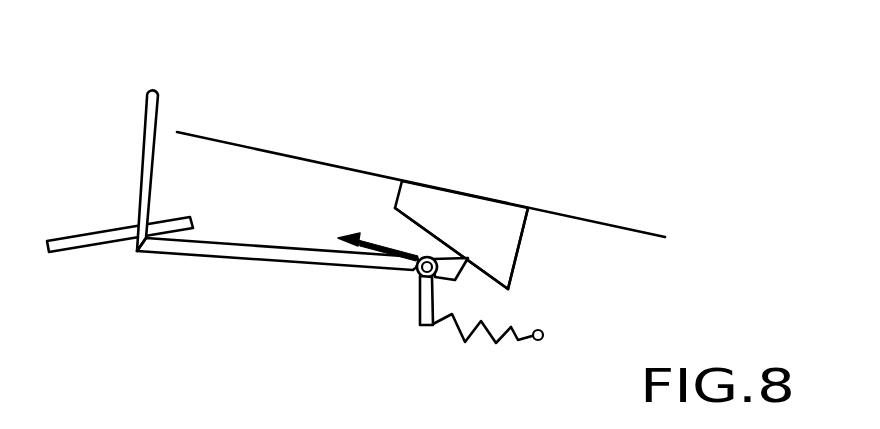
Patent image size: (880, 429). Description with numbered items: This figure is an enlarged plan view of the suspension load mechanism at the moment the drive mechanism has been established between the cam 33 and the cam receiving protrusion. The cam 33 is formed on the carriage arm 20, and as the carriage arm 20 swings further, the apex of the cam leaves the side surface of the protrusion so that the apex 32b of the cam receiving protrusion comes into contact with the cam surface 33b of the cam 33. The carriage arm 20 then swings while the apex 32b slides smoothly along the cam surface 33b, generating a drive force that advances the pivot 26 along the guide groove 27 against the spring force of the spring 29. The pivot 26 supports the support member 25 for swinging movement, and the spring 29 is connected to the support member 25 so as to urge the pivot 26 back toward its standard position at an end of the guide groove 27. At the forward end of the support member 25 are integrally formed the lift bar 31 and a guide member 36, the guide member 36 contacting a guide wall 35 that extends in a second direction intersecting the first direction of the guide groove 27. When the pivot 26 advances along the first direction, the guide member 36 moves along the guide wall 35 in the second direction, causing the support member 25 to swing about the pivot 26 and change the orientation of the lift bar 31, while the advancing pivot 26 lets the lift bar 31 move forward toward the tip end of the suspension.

The carriage arm 20 is at (630, 222).
The support member 25 is at (250, 261).
The pivot 26 is at (417, 278).
The guide groove 27 is at (377, 242).
The spring 29 is at (517, 343).
The lift bar 31 is at (152, 177).
The apex of the cam receiving protrusion 32b is at (470, 257).
The cam 33 is at (522, 245).
The cam surface 33b is at (490, 277).
The guide wall 35 is at (66, 238).
The guide member 36 is at (137, 252).